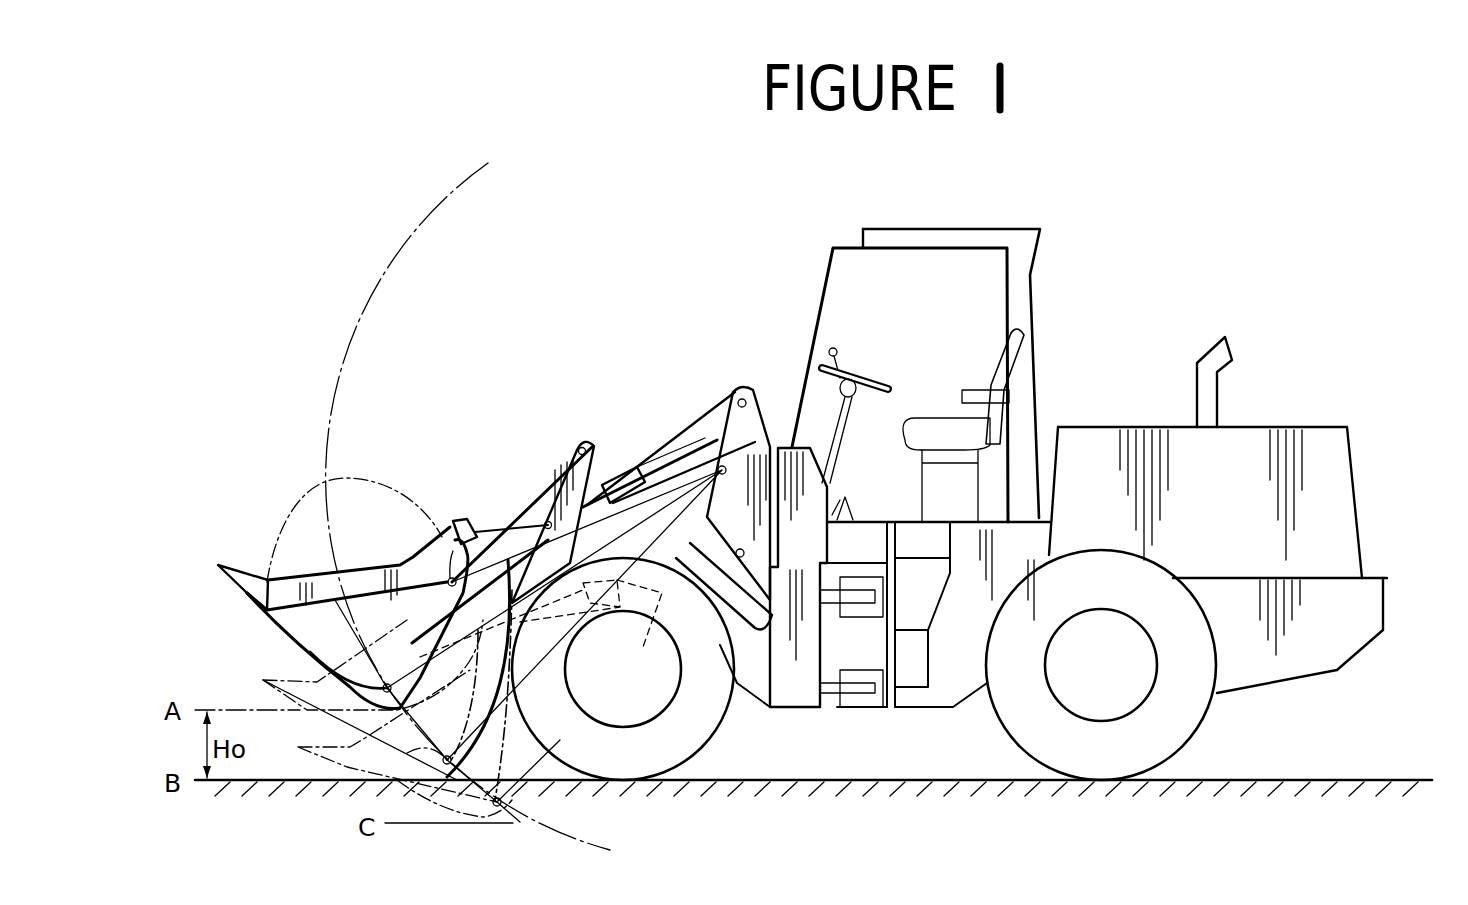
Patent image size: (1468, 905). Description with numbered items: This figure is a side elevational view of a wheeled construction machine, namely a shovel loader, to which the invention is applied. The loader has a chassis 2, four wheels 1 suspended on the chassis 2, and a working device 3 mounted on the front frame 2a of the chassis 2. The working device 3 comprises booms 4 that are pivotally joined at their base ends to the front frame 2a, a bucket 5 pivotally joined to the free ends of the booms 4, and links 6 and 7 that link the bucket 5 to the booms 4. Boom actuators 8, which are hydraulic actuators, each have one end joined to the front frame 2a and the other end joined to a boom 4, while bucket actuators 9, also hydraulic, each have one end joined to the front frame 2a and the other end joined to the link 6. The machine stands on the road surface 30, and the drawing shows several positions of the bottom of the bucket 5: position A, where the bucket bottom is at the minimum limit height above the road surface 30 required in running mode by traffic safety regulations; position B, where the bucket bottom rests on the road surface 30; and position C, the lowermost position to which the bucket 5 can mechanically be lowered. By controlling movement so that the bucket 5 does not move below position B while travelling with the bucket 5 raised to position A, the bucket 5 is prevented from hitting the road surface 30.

The wheels 1 is at (671, 762).
The chassis 2 is at (920, 710).
The front frame 2a is at (790, 710).
The working device 3 is at (502, 452).
The booms 4 is at (633, 497).
The bucket 5 is at (300, 577).
The link 6 is at (545, 487).
The link 7 is at (497, 527).
The boom actuators 8 is at (541, 622).
The bucket actuators 9 is at (700, 435).
The road surface 30 is at (1360, 779).